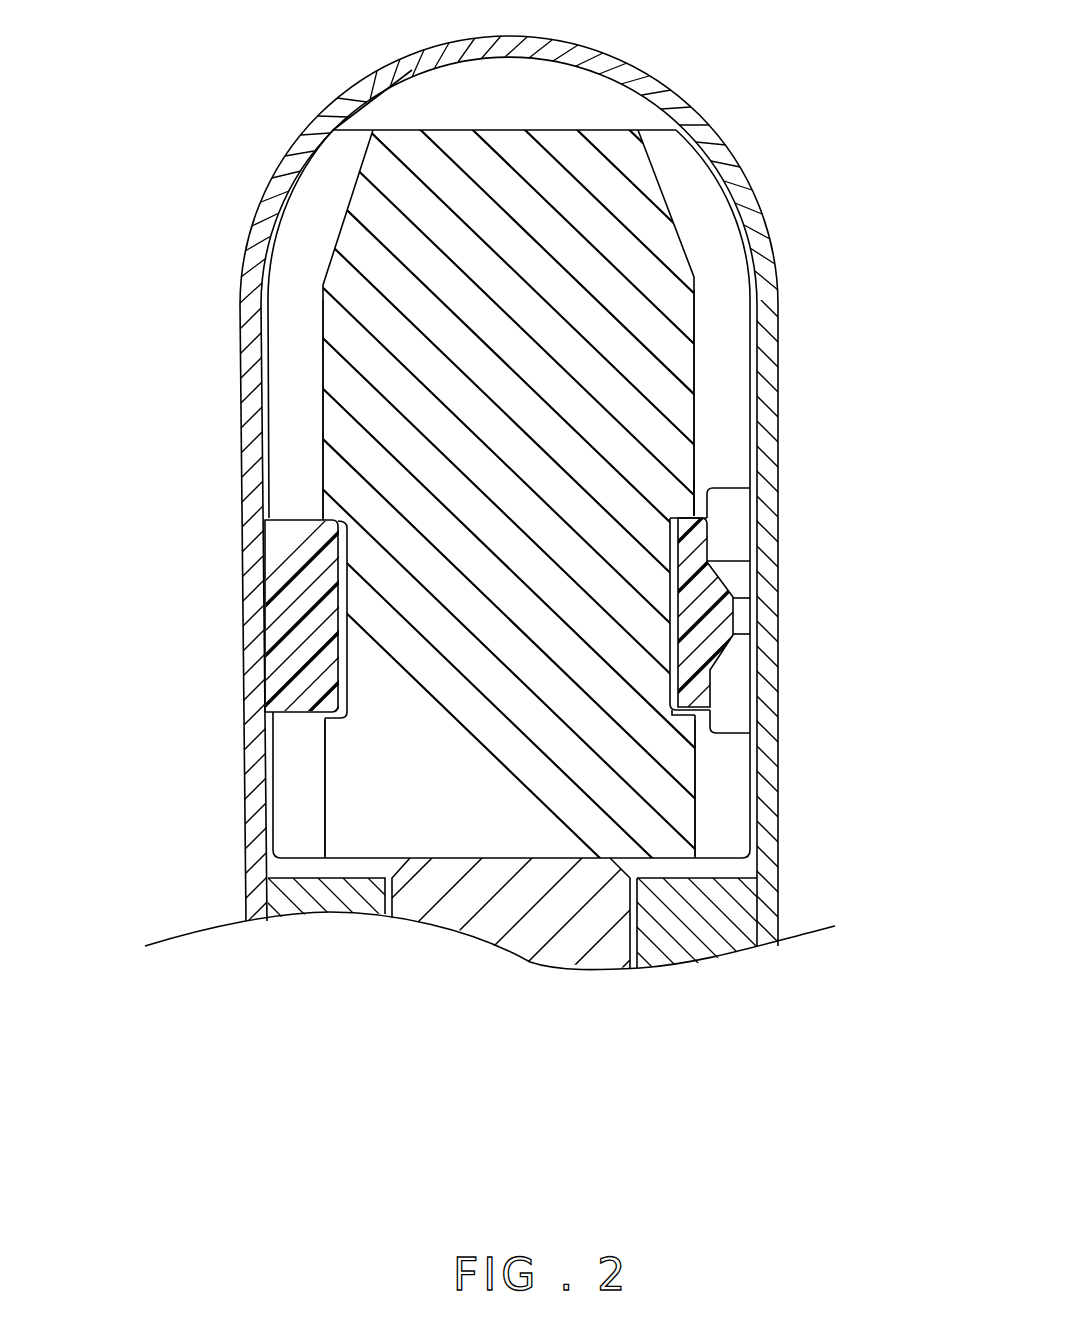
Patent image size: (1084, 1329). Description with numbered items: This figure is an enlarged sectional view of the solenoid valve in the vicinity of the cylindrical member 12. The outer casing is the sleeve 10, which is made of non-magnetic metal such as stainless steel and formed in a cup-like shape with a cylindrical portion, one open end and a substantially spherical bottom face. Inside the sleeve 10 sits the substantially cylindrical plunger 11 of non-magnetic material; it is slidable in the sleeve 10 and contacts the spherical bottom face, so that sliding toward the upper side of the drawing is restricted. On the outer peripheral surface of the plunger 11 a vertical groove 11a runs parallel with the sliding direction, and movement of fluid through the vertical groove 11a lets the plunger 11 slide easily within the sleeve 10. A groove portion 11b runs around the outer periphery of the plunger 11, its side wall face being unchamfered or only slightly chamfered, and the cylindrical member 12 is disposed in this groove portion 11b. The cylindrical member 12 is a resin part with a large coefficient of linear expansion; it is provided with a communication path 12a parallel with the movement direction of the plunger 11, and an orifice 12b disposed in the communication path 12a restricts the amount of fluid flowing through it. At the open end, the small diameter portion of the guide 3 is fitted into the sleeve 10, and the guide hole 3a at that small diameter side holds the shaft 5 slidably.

The sleeve 10 is at (603, 48).
The plunger 11 is at (597, 130).
The vertical groove 11a is at (292, 358).
The groove portion 11b is at (676, 500).
The cylindrical member 12 is at (284, 612).
The communication path 12a is at (730, 534).
The orifice 12b is at (744, 612).
The shaft 5 is at (760, 868).
The guide 3 is at (730, 912).
The guide hole 3a is at (635, 940).